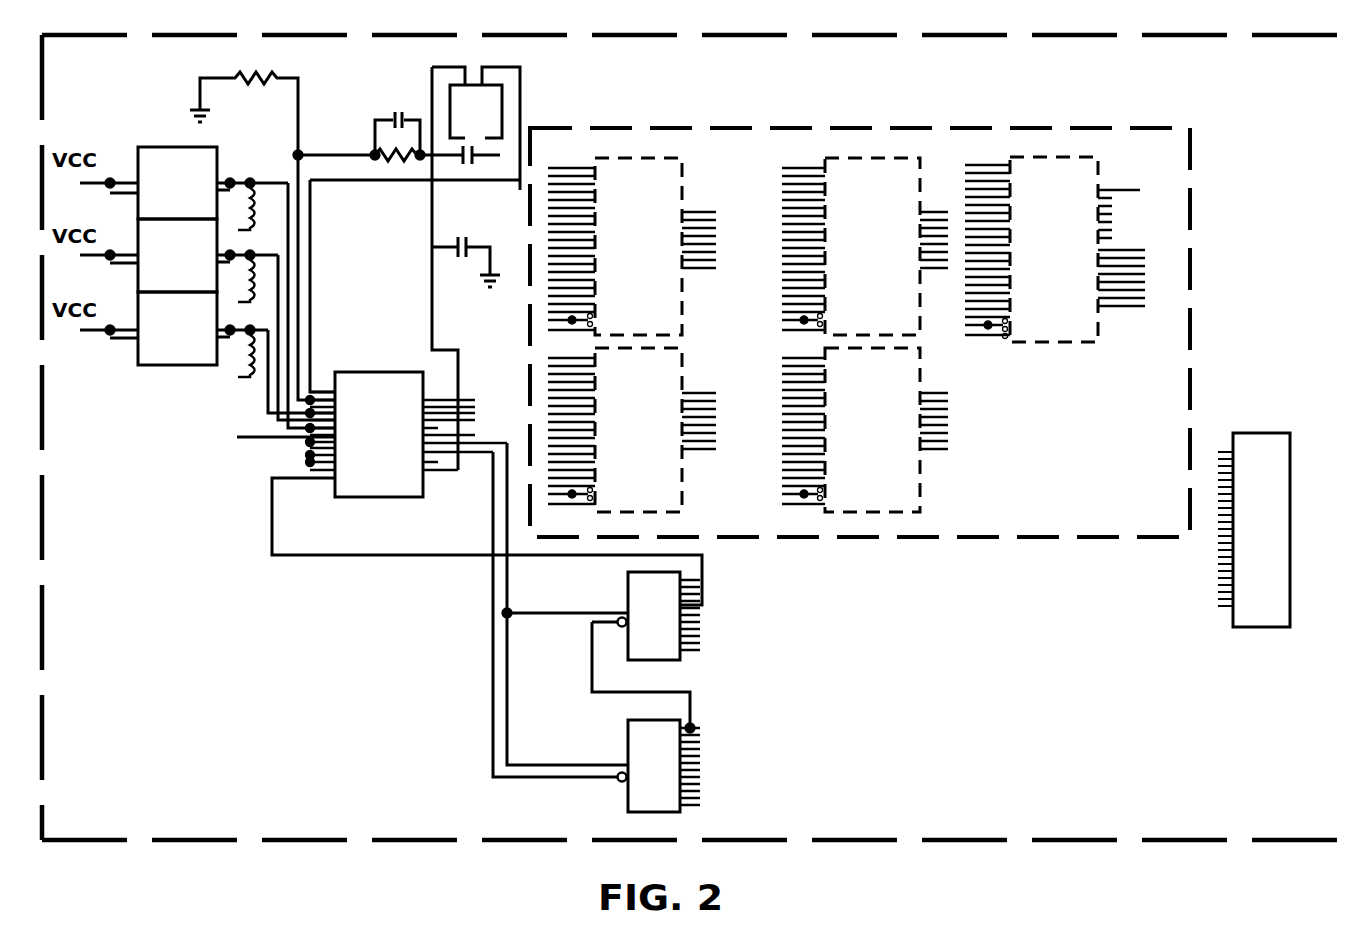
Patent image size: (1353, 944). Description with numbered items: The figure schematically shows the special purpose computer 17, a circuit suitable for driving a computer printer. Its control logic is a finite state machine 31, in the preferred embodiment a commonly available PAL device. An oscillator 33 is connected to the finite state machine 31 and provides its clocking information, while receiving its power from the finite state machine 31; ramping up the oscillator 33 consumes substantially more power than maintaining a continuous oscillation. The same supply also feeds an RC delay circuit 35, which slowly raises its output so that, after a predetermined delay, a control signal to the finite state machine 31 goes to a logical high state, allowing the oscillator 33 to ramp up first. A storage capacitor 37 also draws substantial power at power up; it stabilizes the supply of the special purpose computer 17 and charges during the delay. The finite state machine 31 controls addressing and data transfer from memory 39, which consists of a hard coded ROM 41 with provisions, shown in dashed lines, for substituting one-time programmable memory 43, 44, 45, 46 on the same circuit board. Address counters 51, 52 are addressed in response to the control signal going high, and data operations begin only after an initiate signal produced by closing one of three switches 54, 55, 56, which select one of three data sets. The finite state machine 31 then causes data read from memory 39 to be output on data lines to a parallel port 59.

The special purpose computer 17 is at (350, 842).
The finite state machine 31 is at (380, 390).
The oscillator 33 is at (495, 104).
The RC delay circuit 35 is at (377, 131).
The storage capacitor 37 is at (463, 244).
The memory 39 is at (1195, 290).
The hard coded ROM 41 is at (1052, 342).
The one-time programmable memory 43 is at (594, 170).
The one-time programmable memory 44 is at (826, 166).
The one-time programmable memory 45 is at (681, 504).
The one-time programmable memory 46 is at (919, 497).
The address counter 51 is at (630, 600).
The address counter 52 is at (636, 745).
The switch 54 is at (140, 150).
The switch 55 is at (140, 240).
The switch 56 is at (140, 315).
The parallel port 59 is at (1241, 618).